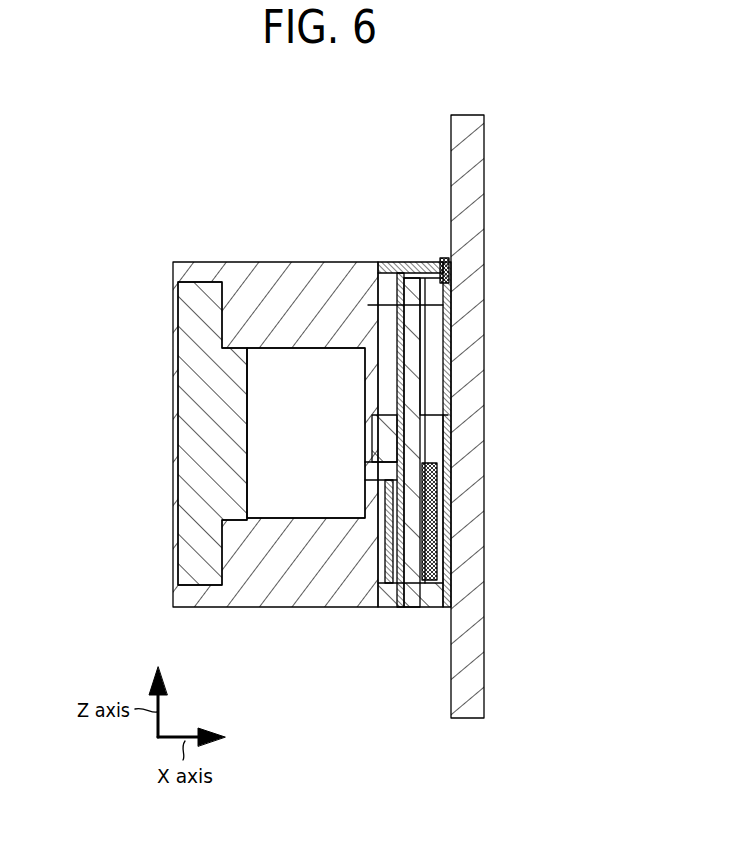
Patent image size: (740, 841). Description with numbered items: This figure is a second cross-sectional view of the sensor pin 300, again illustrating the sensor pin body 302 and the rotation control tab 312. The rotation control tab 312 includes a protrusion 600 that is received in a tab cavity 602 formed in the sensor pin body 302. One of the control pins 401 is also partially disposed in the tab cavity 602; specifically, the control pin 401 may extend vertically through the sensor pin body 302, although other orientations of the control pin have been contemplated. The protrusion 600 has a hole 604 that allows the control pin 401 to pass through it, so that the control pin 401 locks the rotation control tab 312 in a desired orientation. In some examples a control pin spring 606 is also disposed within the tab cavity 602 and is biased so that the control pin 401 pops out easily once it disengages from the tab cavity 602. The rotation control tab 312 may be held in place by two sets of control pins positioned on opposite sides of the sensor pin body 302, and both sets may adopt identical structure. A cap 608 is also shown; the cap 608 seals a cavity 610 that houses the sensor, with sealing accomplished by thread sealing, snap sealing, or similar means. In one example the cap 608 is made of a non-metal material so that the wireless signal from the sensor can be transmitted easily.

The sensor pin 300 is at (97, 109).
The sensor pin body 302 is at (447, 157).
The rotation control tab 312 is at (449, 652).
The control pin 401 is at (408, 262).
The protrusion 600 is at (441, 450).
The tab cavity 602 is at (382, 336).
The hole 604 is at (441, 433).
The control pin spring 606 is at (441, 542).
The cap 608 is at (175, 408).
The cavity 610 is at (322, 448).